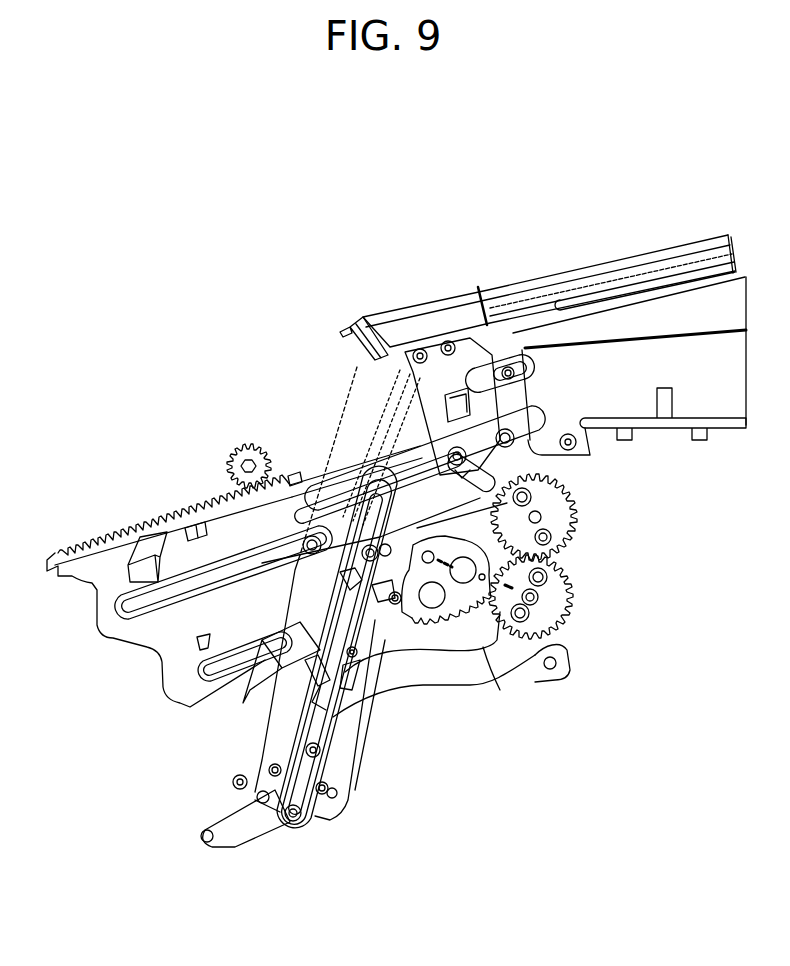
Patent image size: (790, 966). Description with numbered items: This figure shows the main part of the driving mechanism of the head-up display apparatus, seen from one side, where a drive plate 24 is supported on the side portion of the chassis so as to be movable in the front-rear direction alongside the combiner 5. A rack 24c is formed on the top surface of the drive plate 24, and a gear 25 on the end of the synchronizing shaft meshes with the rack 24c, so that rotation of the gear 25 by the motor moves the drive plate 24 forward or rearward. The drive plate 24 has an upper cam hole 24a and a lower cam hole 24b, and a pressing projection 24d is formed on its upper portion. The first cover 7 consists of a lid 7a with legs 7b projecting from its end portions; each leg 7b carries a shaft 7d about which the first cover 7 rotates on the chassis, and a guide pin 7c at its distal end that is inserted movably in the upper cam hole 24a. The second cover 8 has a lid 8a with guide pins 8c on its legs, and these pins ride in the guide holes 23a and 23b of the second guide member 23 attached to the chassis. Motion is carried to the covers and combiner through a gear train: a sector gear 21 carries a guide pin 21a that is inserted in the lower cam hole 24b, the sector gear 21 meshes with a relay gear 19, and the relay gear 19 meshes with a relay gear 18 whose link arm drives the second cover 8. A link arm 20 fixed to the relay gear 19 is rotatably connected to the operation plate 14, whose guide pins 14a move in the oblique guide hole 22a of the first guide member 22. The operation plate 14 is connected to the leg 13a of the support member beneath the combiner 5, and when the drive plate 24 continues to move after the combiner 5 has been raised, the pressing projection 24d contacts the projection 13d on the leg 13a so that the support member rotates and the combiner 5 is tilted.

The combiner 5 is at (380, 385).
The first cover 7 is at (365, 317).
The lid 7a is at (416, 304).
The leg 7b is at (367, 400).
The guide pin 7c is at (500, 507).
The shaft 7d is at (380, 440).
The second cover 8 is at (630, 252).
The lid 8a is at (698, 243).
The guide pin 8c is at (518, 368).
The leg 13a is at (218, 812).
The projection 13d is at (203, 841).
The operation plate 14 is at (273, 742).
The guide pin 14a is at (343, 767).
The relay gear 18 is at (550, 500).
The relay gear 19 is at (553, 588).
The link arm 20 is at (455, 680).
The sector gear 21 is at (493, 677).
The guide pin 21a is at (410, 650).
The first guide member 22 is at (277, 823).
The guide hole 22a is at (350, 655).
The second guide member 23 is at (687, 402).
The guide hole 23a is at (463, 350).
The guide hole 23b is at (576, 312).
The drive plate 24 is at (98, 603).
The cam hole 24a is at (288, 480).
The cam hole 24b is at (205, 668).
The rack 24c is at (80, 545).
The pressing projection 24d is at (150, 540).
The gear 25 is at (232, 455).